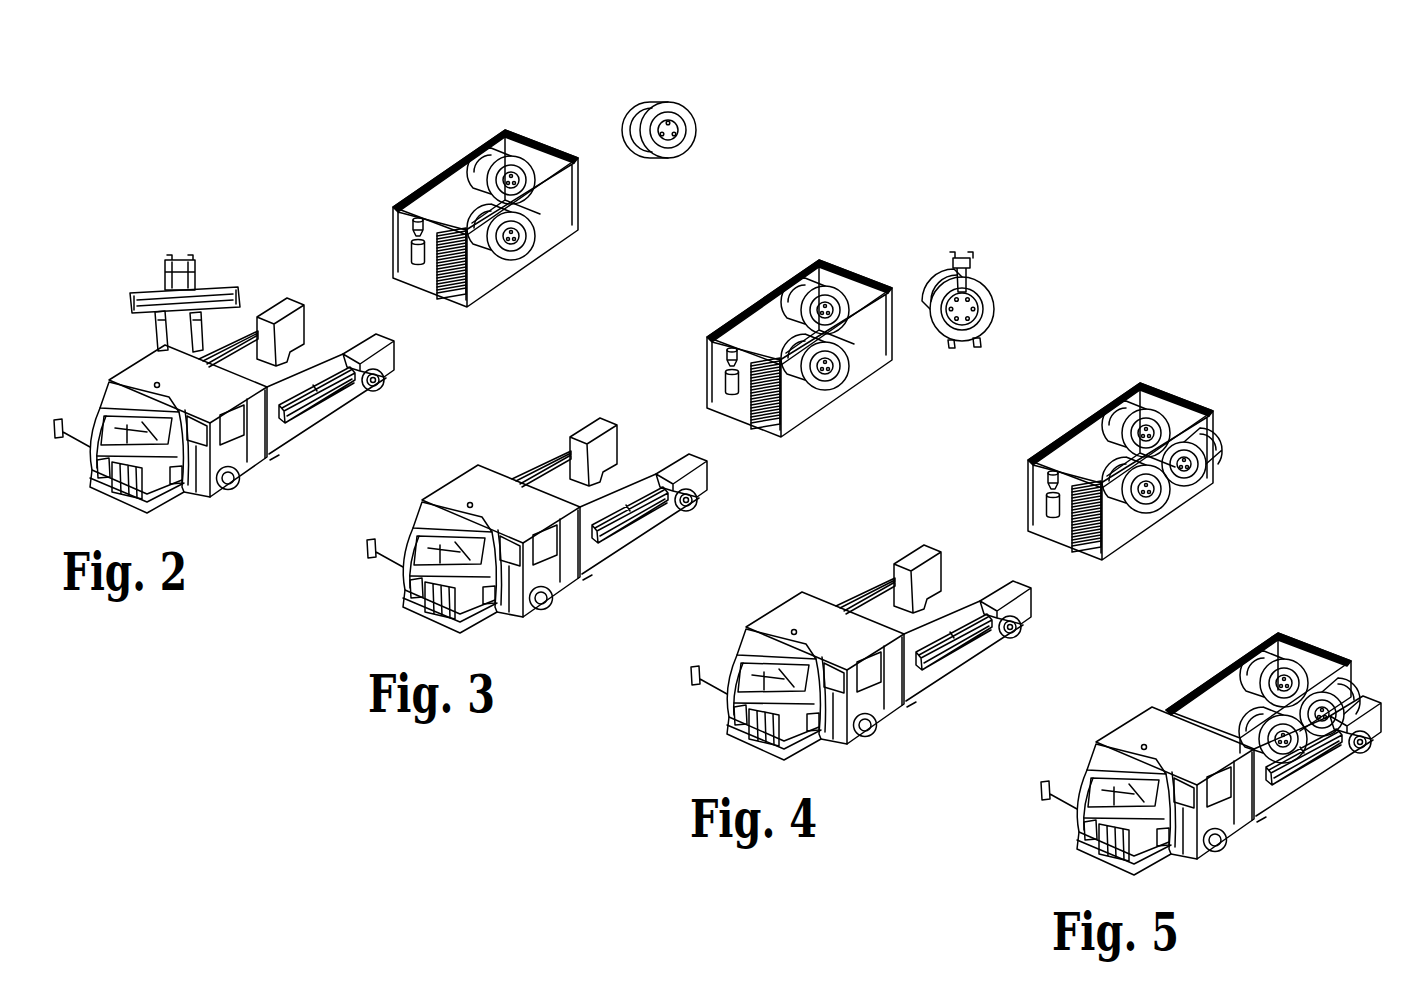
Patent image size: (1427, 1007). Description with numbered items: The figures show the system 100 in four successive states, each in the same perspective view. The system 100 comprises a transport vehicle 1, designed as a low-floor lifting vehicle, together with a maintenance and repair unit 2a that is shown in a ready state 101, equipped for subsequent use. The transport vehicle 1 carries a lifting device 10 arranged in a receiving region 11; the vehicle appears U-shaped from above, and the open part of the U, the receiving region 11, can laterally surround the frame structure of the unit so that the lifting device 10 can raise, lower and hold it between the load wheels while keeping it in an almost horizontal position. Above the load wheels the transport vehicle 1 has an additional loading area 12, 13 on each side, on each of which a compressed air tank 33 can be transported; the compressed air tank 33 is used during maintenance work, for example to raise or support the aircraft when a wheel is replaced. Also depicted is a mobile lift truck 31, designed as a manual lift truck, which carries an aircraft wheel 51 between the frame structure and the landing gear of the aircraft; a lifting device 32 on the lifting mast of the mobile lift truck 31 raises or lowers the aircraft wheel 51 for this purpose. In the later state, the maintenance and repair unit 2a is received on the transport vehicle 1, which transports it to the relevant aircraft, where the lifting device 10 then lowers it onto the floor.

In FIG. 2, the transport vehicle 1 is at (224, 391).
In FIG. 3, the transport vehicle 1 is at (537, 497).
In FIG. 4, the transport vehicle 1 is at (861, 641).
In FIG. 5, the transport vehicle 1 is at (1220, 705).
In FIG. 2, the lifting device 10 is at (271, 372).
In FIG. 4, the lifting device 10 is at (950, 586).
In FIG. 2, the receiving region 11 is at (330, 343).
In FIG. 3, the receiving region 11 is at (637, 457).
In FIG. 2, the additional loading area 12 is at (320, 409).
In FIG. 2, the additional loading area 13 is at (242, 346).
In FIG. 2, the maintenance and repair unit 2a is at (450, 158).
In FIG. 3, the maintenance and repair unit 2a is at (728, 322).
In FIG. 4, the maintenance and repair unit 2a is at (1146, 432).
In FIG. 5, the maintenance and repair unit 2a is at (1243, 661).
In FIG. 2, the mobile lift truck 31 is at (172, 262).
In FIG. 3, the mobile lift truck 31 is at (956, 258).
In FIG. 2, the lifting device 32 is at (163, 283).
In FIG. 2, the compressed air tank 33 is at (232, 285).
In FIG. 3, the aircraft wheel 51 is at (985, 264).
In FIG. 2, the system 100 is at (479, 173).
In FIG. 3, the system 100 is at (742, 290).
In FIG. 4, the system 100 is at (1100, 432).
In FIG. 5, the system 100 is at (1283, 649).
In FIG. 3, the ready state 101 is at (666, 333).
In FIG. 4, the ready state 101 is at (1207, 381).